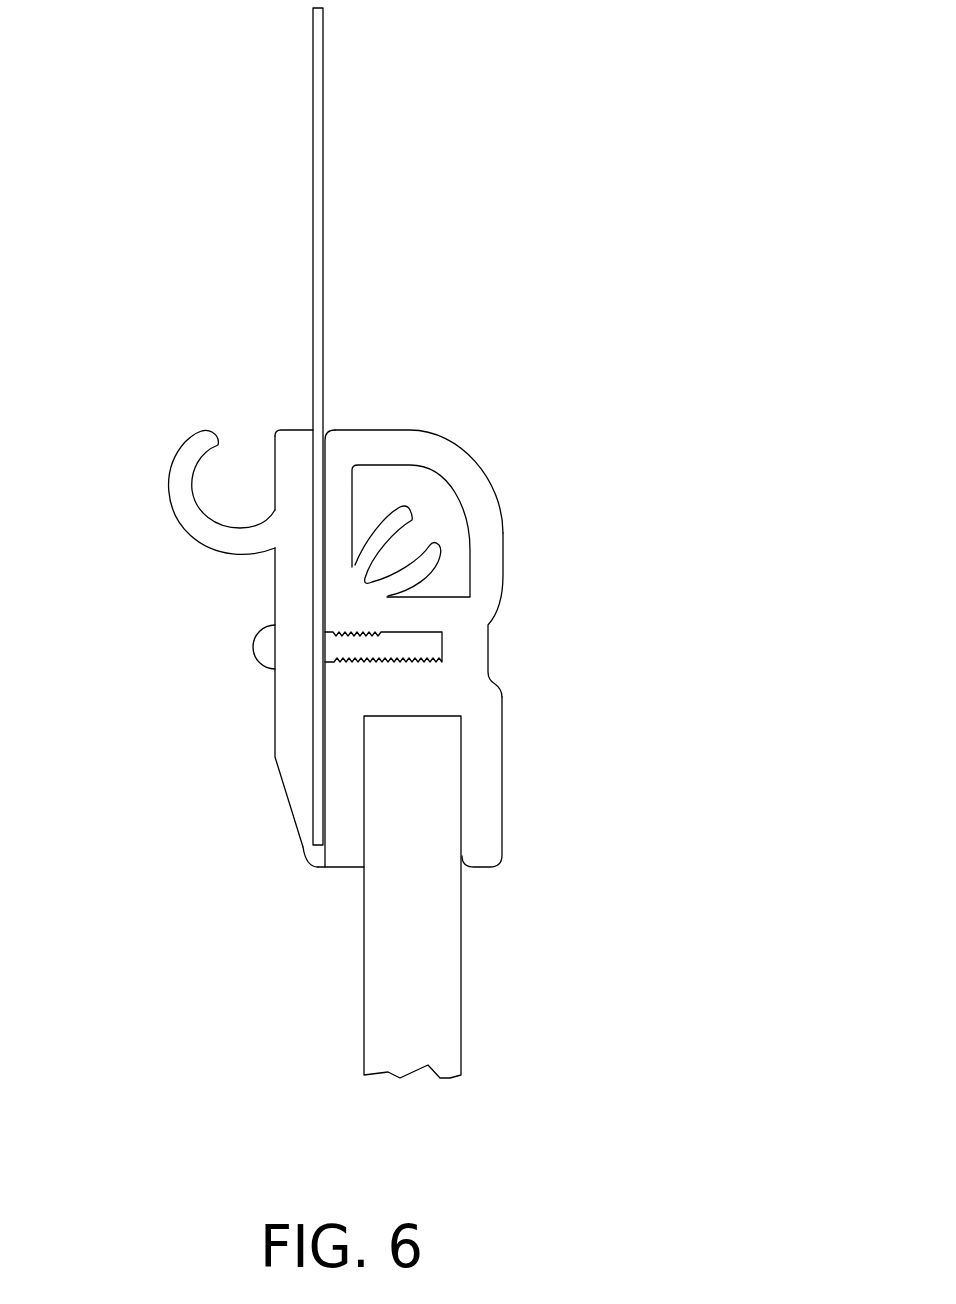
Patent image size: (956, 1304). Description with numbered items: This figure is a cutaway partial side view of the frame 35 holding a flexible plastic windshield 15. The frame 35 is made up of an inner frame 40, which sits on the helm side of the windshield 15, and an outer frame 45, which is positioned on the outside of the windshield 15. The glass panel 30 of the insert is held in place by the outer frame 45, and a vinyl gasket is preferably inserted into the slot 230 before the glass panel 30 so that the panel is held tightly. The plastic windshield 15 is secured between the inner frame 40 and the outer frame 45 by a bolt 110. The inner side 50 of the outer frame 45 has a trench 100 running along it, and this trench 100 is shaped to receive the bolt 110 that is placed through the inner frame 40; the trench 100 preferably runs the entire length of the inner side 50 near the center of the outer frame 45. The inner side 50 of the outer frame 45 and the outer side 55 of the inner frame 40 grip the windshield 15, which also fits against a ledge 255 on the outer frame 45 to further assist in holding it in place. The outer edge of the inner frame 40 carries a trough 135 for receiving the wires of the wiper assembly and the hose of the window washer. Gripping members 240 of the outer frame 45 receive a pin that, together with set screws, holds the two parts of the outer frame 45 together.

The flexible plastic windshield 15 is at (323, 115).
The glass panel 30 is at (430, 978).
The frame 35 is at (432, 420).
The inner frame 40 is at (280, 793).
The outer frame 45 is at (510, 552).
The inner side 50 is at (313, 497).
The outer side 55 is at (308, 832).
The trench 100 is at (430, 643).
The bolt 110 is at (253, 647).
The trough 135 is at (240, 507).
The slot 230 is at (462, 750).
The gripping members 240 is at (412, 515).
The ledge 255 is at (303, 860).